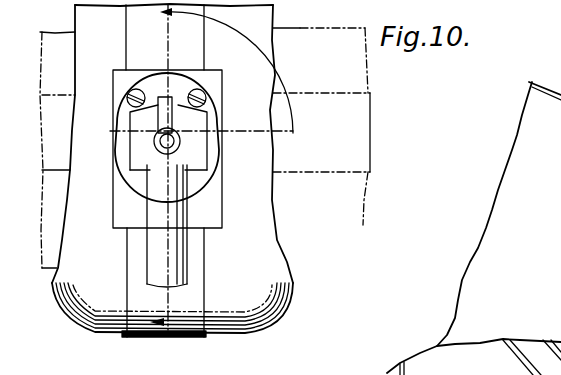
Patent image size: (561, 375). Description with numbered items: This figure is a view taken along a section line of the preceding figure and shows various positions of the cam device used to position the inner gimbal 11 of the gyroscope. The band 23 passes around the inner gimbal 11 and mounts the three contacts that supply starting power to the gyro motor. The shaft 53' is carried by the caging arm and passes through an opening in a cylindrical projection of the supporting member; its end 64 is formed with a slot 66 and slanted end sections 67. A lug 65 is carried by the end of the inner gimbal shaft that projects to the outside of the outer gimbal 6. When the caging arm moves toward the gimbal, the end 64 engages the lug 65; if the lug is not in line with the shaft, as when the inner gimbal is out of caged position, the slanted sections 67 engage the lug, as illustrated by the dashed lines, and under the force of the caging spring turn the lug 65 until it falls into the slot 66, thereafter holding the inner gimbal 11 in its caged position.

The outer gimbal 6 is at (108, 231).
The inner gimbal 11 is at (62, 321).
The band 23 is at (358, 135).
The shaft 53' is at (193, 226).
The end of shaft 64 is at (198, 149).
The lug 65 is at (158, 116).
The slot 66 is at (154, 131).
The slanted end sections 67 is at (172, 101).